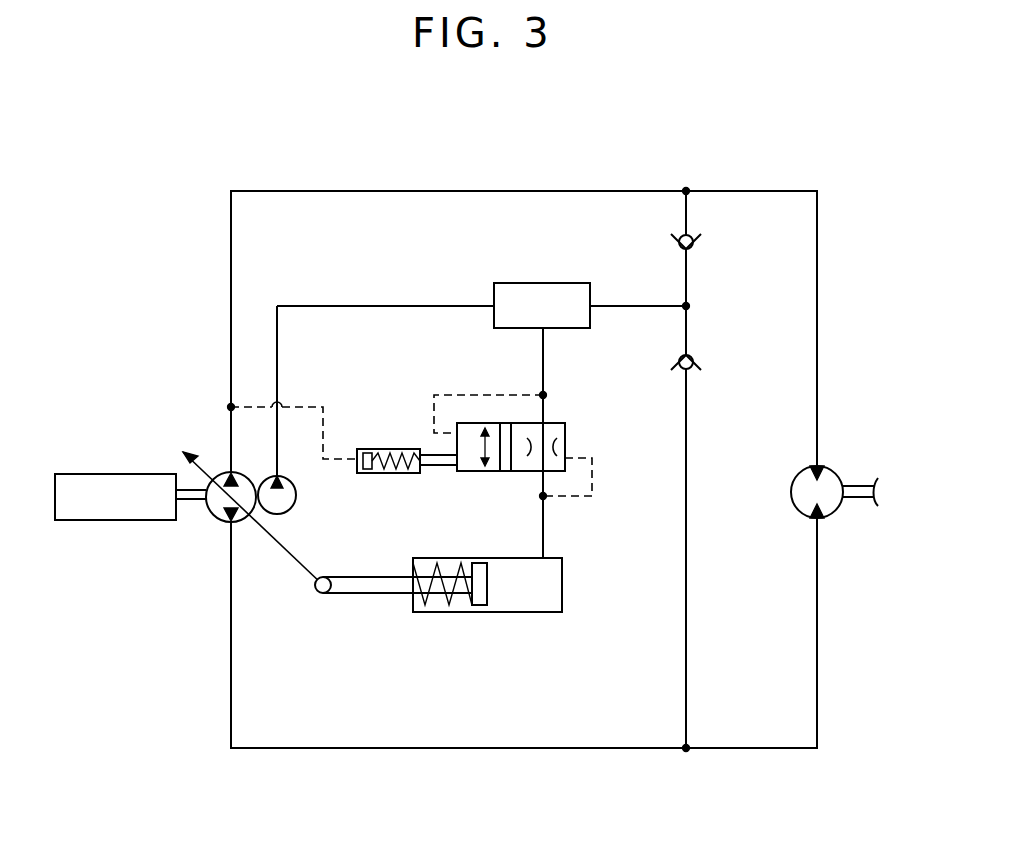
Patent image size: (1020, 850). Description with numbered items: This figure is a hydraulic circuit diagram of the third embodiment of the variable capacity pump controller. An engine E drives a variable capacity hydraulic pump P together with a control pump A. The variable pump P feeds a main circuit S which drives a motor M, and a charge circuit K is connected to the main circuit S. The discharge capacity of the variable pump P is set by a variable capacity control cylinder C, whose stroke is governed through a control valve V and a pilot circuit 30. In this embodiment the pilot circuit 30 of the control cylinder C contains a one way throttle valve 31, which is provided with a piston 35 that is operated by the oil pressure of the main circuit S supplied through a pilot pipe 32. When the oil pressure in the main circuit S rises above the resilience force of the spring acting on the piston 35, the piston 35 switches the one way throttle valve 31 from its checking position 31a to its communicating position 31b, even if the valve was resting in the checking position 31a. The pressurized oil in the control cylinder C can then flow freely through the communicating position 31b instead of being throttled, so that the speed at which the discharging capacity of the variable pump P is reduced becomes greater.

The main circuit S is at (349, 191).
The control valve V is at (547, 283).
The charge circuit K is at (697, 307).
The motor M is at (828, 469).
The engine E is at (133, 474).
The variable capacity hydraulic pump P is at (212, 517).
The control pump A is at (288, 514).
The pilot pipe 32 is at (325, 415).
The pilot circuit 30 is at (543, 367).
The one way throttle valve 31 is at (565, 440).
The piston 35 is at (390, 473).
The communicating position 31b is at (470, 471).
The checking position 31a is at (525, 471).
The variable capacity control cylinder C is at (522, 612).